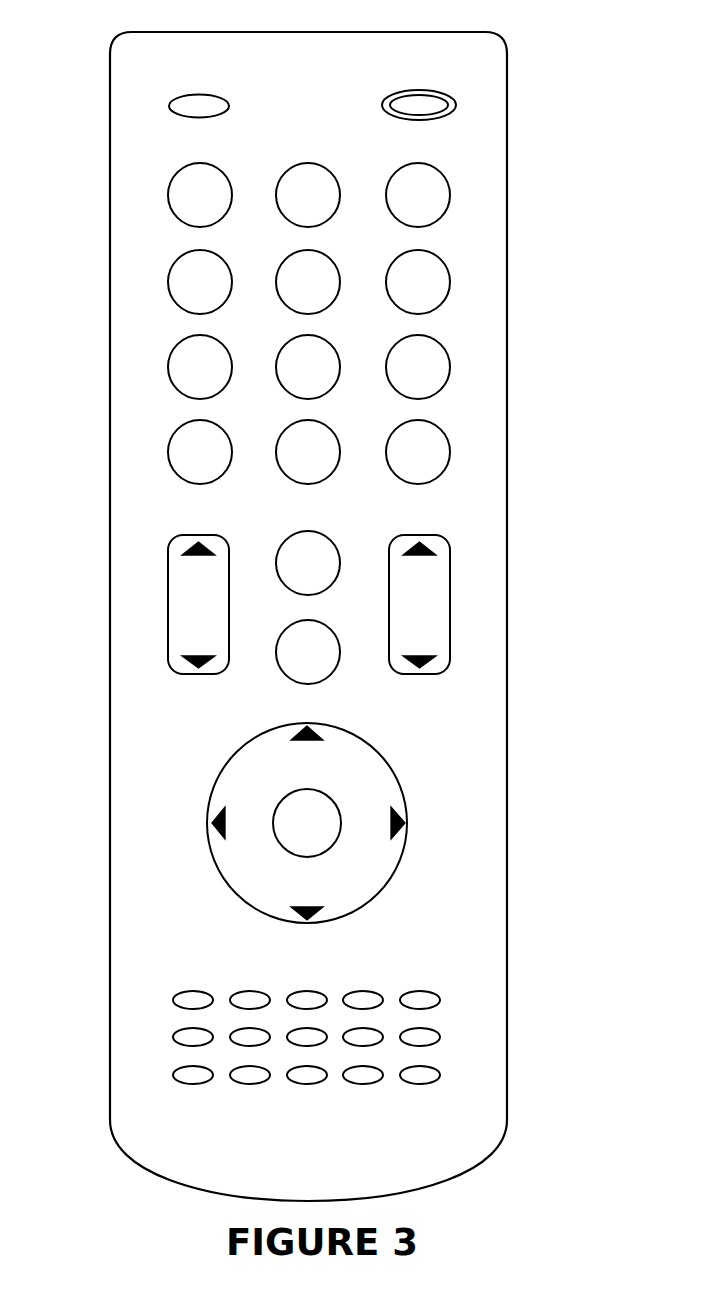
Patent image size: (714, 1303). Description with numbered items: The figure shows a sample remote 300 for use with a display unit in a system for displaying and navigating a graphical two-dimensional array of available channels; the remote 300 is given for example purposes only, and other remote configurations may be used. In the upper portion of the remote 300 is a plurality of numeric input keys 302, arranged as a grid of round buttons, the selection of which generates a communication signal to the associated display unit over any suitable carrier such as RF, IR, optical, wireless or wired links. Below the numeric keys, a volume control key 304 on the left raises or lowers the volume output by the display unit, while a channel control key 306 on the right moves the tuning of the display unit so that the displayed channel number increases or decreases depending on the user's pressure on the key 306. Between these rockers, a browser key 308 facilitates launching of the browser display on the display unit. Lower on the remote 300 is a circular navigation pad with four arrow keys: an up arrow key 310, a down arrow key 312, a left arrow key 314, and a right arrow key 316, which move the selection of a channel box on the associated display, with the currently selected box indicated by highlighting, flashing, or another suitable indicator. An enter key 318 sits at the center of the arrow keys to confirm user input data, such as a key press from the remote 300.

The remote 300 is at (517, 87).
The numeric input keys 302 is at (465, 260).
The volume control key 304 is at (190, 633).
The channel control key 306 is at (450, 610).
The browser key 308 is at (283, 677).
The up arrow key 310 is at (320, 722).
The down arrow key 312 is at (322, 918).
The left arrow key 314 is at (207, 823).
The right arrow key 316 is at (405, 830).
The enter key 318 is at (275, 837).